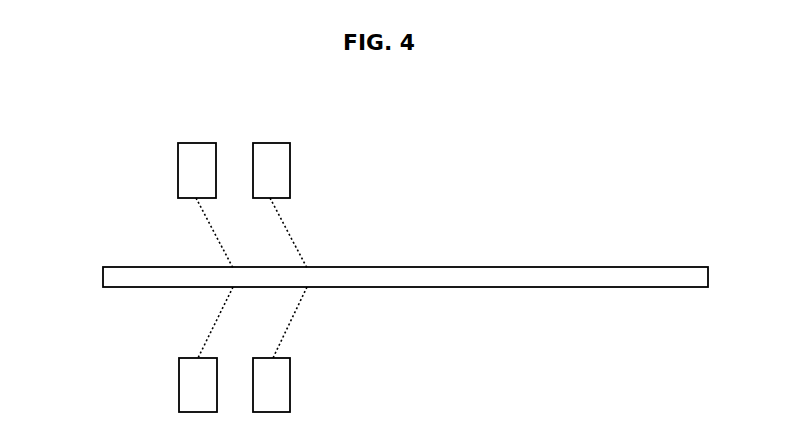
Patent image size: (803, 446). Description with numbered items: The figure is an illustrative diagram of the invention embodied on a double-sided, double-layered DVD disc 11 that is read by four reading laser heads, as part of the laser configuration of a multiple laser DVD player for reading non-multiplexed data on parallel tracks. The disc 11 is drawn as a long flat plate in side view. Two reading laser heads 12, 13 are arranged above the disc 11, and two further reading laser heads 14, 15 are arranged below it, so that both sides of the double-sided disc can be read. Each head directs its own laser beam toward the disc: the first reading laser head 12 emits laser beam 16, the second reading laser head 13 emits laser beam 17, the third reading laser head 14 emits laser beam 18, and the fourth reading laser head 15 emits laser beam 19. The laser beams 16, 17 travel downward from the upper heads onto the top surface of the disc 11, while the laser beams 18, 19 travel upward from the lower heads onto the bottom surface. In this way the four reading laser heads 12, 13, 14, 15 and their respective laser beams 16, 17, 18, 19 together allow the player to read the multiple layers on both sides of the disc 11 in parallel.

The double-sided, double-layered DVD disc 11 is at (580, 268).
The reading laser head 12 is at (178, 179).
The reading laser head 13 is at (290, 160).
The reading laser head 14 is at (179, 394).
The reading laser head 15 is at (291, 387).
The laser beam 16 is at (215, 233).
The laser beam 17 is at (297, 245).
The laser beam 18 is at (205, 340).
The laser beam 19 is at (290, 323).